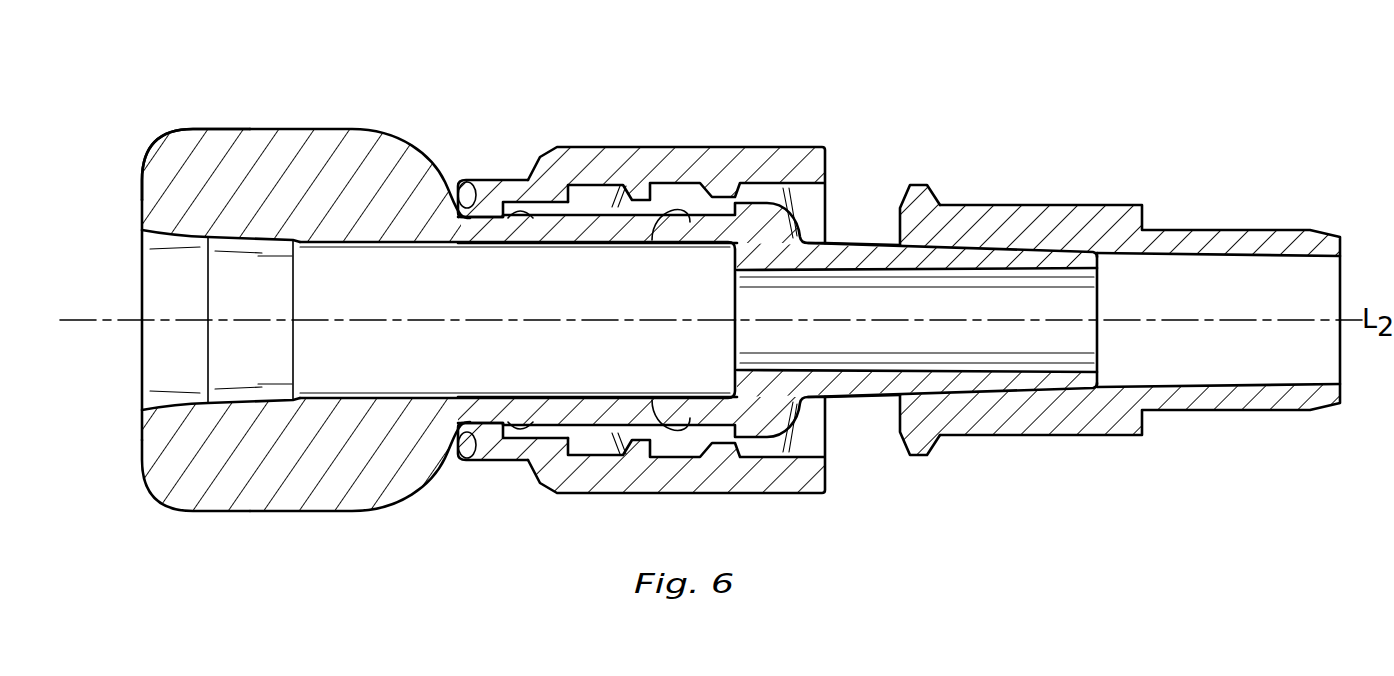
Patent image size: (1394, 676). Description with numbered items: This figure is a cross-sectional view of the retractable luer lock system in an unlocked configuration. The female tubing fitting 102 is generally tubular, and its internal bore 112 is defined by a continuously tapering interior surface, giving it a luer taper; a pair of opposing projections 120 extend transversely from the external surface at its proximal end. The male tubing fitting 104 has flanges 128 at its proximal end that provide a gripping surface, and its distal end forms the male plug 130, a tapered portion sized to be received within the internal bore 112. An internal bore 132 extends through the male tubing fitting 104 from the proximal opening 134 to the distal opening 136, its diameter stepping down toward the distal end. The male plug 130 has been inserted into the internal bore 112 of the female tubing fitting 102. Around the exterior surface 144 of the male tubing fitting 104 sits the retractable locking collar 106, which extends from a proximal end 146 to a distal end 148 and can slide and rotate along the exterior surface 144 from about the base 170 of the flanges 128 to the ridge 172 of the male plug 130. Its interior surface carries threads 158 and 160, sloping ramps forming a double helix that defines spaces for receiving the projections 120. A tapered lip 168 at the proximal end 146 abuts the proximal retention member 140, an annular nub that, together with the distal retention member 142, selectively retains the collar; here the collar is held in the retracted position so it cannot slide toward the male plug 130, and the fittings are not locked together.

The female tubing fitting 102 is at (1093, 201).
The male tubing fitting 104 is at (301, 124).
The retractable locking collar 106 is at (700, 143).
The internal bore 112 is at (1208, 334).
The projections 120 is at (921, 185).
The flanges 128 is at (224, 128).
The male plug 130 is at (851, 242).
The internal bore 132 is at (366, 334).
The proximal opening 134 is at (141, 268).
The distal opening 136 is at (1099, 343).
The proximal retention member 140 is at (521, 222).
The distal retention member 142 is at (671, 219).
The exterior surface 144 is at (583, 186).
The proximal end 146 is at (440, 494).
The distal end 148 is at (851, 500).
The thread 158 is at (742, 188).
The thread 160 is at (745, 456).
The tapered lip 168 is at (492, 182).
The base 170 is at (461, 182).
The ridge 172 is at (801, 437).